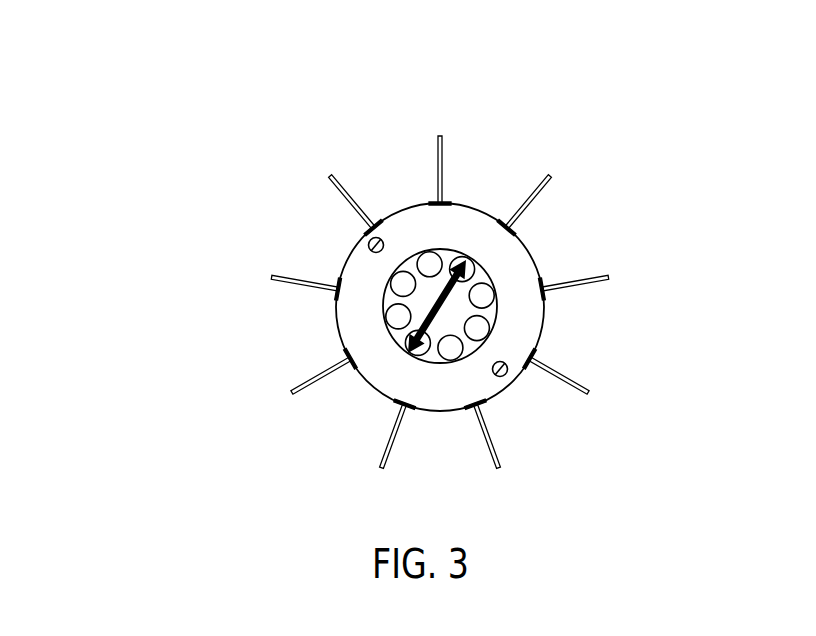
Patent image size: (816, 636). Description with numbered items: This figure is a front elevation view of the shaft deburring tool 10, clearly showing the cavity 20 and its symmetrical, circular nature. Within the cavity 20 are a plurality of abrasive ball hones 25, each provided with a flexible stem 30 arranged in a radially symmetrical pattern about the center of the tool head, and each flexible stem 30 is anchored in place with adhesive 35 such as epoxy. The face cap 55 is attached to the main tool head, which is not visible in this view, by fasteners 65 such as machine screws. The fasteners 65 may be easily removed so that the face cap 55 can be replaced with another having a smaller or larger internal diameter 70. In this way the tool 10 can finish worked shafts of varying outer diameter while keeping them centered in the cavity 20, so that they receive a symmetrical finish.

The shaft deburring tool 10 is at (120, 120).
The cavity 20 is at (455, 297).
The abrasive ball hones 25 is at (483, 292).
The flexible stem 30 is at (552, 175).
The adhesive 35 is at (365, 232).
The face cap 55 is at (480, 237).
The fasteners 65 is at (397, 227).
The internal diameter 70 is at (400, 270).